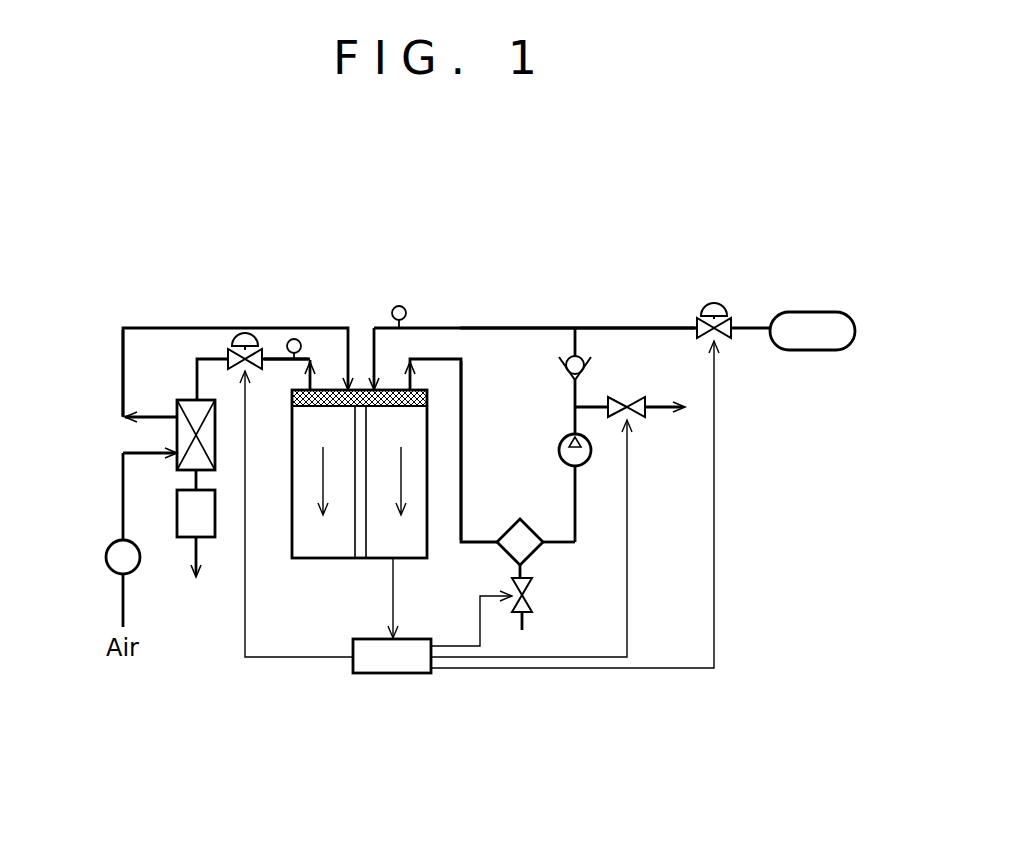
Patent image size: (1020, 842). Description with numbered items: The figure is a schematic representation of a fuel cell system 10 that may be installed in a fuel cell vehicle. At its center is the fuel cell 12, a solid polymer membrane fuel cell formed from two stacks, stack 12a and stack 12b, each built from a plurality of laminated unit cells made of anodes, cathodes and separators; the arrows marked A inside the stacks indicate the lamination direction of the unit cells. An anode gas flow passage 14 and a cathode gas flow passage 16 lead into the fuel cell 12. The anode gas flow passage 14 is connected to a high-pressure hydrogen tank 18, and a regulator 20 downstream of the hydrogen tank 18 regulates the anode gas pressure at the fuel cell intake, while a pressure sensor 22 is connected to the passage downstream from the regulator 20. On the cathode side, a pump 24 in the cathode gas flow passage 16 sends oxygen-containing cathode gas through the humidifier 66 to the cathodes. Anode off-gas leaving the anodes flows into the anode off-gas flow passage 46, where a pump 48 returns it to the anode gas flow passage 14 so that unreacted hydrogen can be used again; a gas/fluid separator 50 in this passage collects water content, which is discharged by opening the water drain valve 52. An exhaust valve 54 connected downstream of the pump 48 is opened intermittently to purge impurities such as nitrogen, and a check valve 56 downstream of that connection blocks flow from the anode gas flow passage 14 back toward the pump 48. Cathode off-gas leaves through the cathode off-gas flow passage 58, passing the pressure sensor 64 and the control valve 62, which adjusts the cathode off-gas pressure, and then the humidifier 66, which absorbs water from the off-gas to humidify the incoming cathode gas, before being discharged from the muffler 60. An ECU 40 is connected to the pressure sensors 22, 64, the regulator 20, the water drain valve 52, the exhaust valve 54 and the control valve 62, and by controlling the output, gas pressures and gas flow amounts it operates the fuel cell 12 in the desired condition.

The fuel cell system 10 is at (467, 292).
The fuel cell 12 is at (303, 568).
The stack 12a is at (320, 553).
The stack 12b is at (375, 560).
The anode gas flow passage 14 is at (542, 327).
The cathode gas flow passage 16 is at (180, 327).
The high-pressure hydrogen tank 18 is at (812, 311).
The regulator 20 is at (713, 304).
The pressure sensor 22 is at (399, 305).
The pump 24 is at (140, 560).
The ECU 40 is at (400, 675).
The anode off-gas flow passage 46 is at (462, 414).
The pump 48 is at (590, 465).
The gas/fluid separator 50 is at (510, 527).
The water drain valve 52 is at (534, 598).
The exhaust valve 54 is at (630, 397).
The check valve 56 is at (560, 370).
The cathode off-gas flow passage 58 is at (270, 361).
The muffler 60 is at (177, 515).
The control valve 62 is at (232, 341).
The pressure sensor 64 is at (294, 338).
The humidifier 66 is at (177, 400).